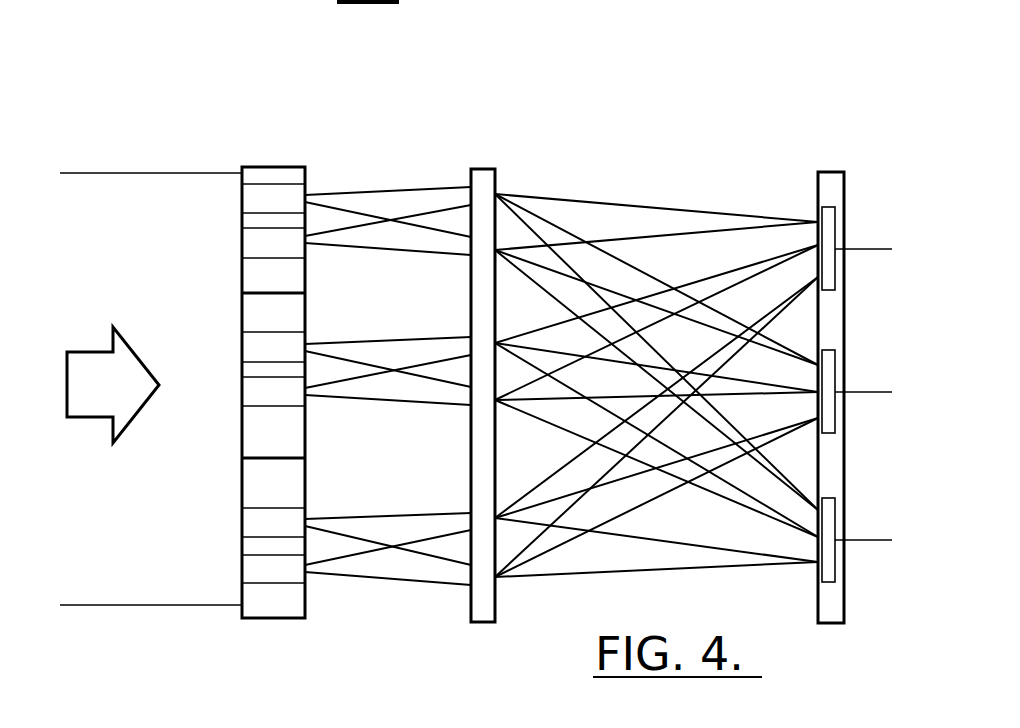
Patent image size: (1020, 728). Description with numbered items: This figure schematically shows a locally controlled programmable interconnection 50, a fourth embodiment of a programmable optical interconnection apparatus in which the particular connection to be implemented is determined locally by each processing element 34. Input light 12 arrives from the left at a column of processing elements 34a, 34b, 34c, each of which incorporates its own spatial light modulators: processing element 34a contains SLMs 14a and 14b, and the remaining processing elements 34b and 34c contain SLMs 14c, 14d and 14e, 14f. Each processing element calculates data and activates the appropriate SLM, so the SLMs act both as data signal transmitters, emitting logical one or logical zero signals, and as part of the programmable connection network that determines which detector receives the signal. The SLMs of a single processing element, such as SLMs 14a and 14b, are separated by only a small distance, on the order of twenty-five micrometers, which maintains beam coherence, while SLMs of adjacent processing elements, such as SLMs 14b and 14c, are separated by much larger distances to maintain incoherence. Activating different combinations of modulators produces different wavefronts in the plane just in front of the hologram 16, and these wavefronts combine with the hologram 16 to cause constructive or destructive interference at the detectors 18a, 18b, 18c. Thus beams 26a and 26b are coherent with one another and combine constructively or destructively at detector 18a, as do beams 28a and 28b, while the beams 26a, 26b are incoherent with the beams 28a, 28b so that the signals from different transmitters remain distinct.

The input light beam 12 is at (147, 570).
The spatial light modulator 14a is at (356, 211).
The spatial light modulator 14b is at (356, 231).
The spatial light modulator 14c is at (356, 361).
The spatial light modulator 14d is at (356, 380).
The spatial light modulator 14e is at (356, 536).
The spatial light modulator 14f is at (356, 557).
The hologram 16 is at (483, 168).
The detector 18a is at (828, 238).
The detector 18b is at (828, 382).
The detector 18c is at (828, 533).
The beam 26a is at (587, 195).
The beam 26b is at (613, 238).
The beam 28a is at (707, 277).
The beam 28b is at (725, 288).
The processing element 34 is at (278, 167).
The processing element 34a is at (253, 176).
The processing element 34b is at (257, 313).
The processing element 34c is at (257, 603).
The locally controlled programmable interconnection 50 is at (820, 82).